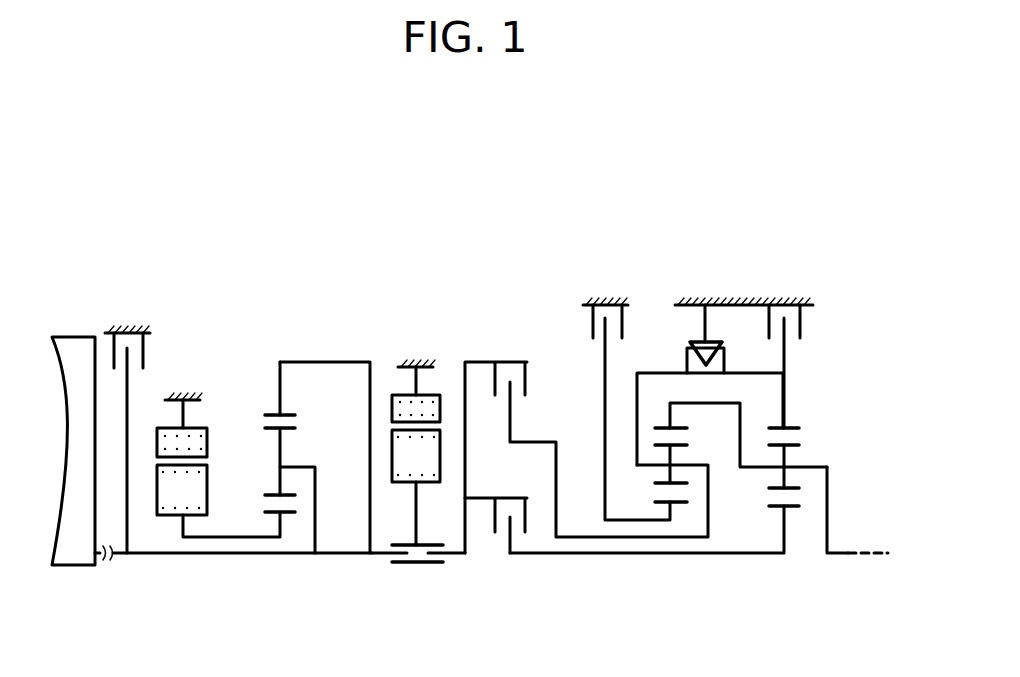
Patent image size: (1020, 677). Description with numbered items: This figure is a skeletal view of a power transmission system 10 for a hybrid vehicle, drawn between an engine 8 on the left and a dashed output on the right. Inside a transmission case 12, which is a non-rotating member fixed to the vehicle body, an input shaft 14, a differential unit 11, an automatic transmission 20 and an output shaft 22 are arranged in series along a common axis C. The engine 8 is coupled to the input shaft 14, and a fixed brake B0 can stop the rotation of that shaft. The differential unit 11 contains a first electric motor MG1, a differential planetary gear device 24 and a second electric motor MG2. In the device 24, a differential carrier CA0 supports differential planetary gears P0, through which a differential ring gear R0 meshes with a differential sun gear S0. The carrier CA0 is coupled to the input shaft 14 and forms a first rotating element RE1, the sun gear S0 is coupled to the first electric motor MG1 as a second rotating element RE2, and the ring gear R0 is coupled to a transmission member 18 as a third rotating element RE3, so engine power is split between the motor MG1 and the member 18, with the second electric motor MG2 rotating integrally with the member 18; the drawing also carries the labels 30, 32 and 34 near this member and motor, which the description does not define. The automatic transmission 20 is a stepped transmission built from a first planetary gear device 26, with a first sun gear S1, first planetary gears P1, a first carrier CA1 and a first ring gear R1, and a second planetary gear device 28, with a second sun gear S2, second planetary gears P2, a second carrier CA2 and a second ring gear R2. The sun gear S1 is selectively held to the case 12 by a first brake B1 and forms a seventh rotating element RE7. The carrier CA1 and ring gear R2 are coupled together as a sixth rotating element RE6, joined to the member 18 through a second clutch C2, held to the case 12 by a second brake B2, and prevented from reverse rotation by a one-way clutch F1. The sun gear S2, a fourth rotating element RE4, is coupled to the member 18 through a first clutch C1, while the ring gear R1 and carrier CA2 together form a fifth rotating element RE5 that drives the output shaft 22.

The engine 8 is at (73, 345).
The power transmission system 10 is at (434, 160).
The differential unit 11 is at (235, 265).
The transmission case 12 is at (139, 330).
The input shaft 14 is at (138, 557).
The transmission member 18 is at (410, 577).
The automatic transmission 20 is at (520, 290).
The output shaft 22 is at (838, 557).
The differential planetary gear device 24 is at (294, 502).
The first planetary gear device 26 is at (673, 520).
The second planetary gear device 28 is at (796, 513).
The shaft portion 30 is at (376, 558).
The shaft portion 32 is at (453, 556).
The motor output shaft 34 is at (428, 544).
The fixed brake B0 is at (128, 427).
The first brake B1 is at (607, 306).
The second brake B2 is at (787, 351).
The one-way clutch F1 is at (705, 323).
The first clutch C1 is at (497, 511).
The second clutch C2 is at (586, 444).
The first electric motor MG1 is at (218, 468).
The second electric motor MG2 is at (416, 424).
The first rotating element RE1 is at (327, 497).
The second rotating element RE2 is at (233, 528).
The third rotating element RE3 is at (275, 377).
The fourth rotating element RE4 is at (607, 557).
The fifth rotating element RE5 is at (690, 403).
The sixth rotating element RE6 is at (680, 372).
The seventh rotating element RE7 is at (605, 472).
The differential ring gear R0 is at (288, 413).
The differential carrier CA0 is at (285, 465).
The differential planetary gears P0 is at (262, 493).
The differential sun gear S0 is at (288, 514).
The first ring gear R1 is at (666, 426).
The first carrier CA1 is at (682, 465).
The first planetary gears P1 is at (686, 486).
The first sun gear S1 is at (655, 500).
The second ring gear R2 is at (790, 425).
The second carrier CA2 is at (797, 462).
The second planetary gears P2 is at (775, 487).
The second sun gear S2 is at (779, 510).
The common axis C is at (864, 553).